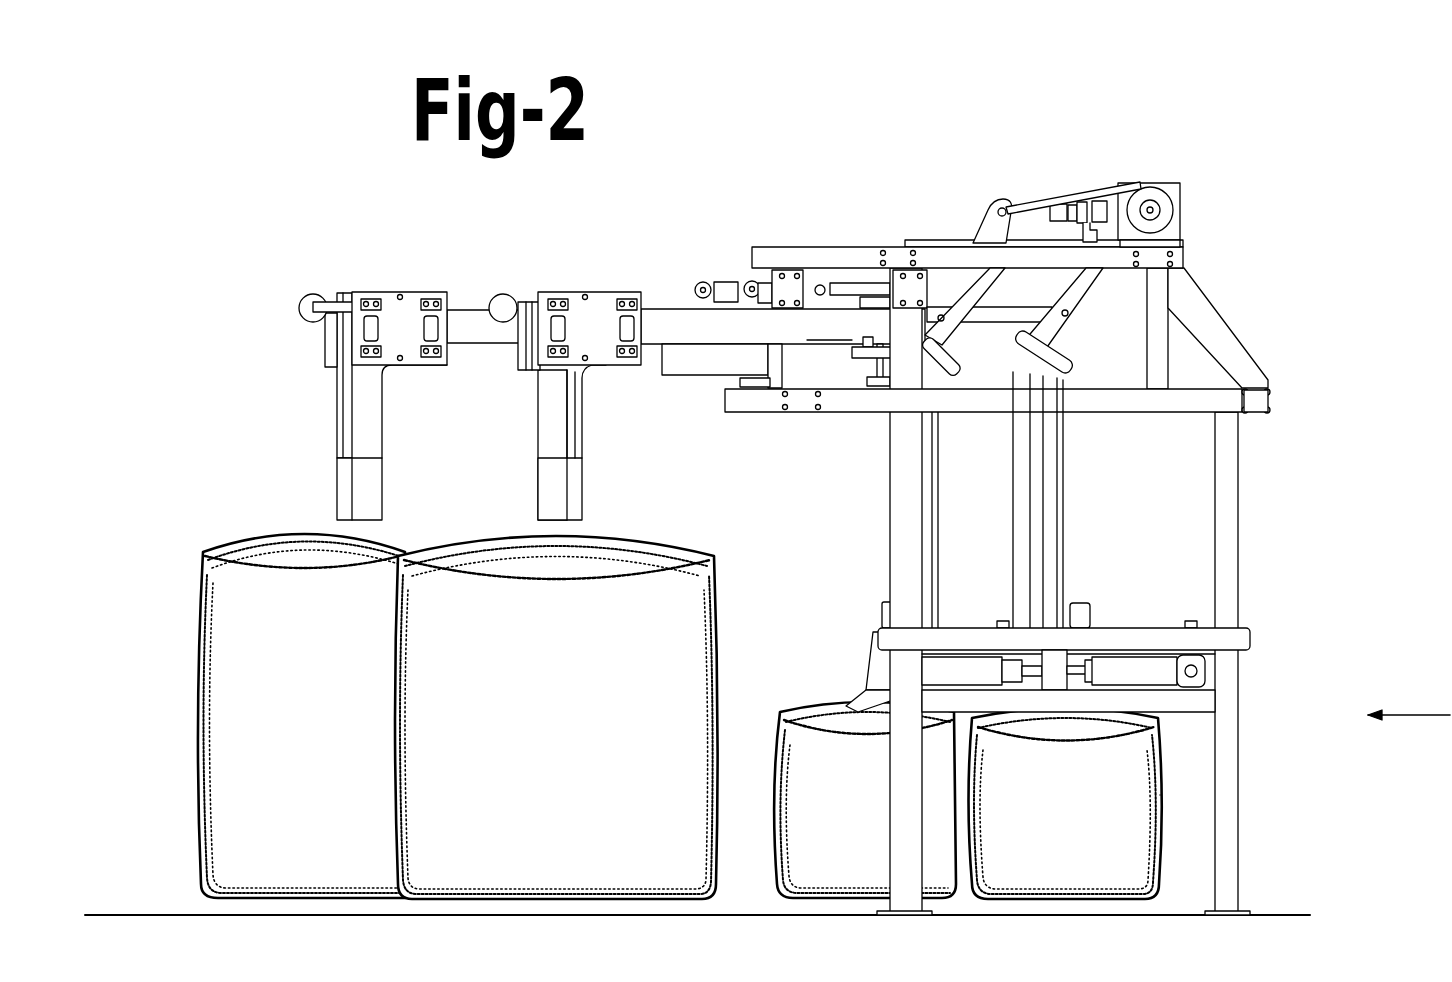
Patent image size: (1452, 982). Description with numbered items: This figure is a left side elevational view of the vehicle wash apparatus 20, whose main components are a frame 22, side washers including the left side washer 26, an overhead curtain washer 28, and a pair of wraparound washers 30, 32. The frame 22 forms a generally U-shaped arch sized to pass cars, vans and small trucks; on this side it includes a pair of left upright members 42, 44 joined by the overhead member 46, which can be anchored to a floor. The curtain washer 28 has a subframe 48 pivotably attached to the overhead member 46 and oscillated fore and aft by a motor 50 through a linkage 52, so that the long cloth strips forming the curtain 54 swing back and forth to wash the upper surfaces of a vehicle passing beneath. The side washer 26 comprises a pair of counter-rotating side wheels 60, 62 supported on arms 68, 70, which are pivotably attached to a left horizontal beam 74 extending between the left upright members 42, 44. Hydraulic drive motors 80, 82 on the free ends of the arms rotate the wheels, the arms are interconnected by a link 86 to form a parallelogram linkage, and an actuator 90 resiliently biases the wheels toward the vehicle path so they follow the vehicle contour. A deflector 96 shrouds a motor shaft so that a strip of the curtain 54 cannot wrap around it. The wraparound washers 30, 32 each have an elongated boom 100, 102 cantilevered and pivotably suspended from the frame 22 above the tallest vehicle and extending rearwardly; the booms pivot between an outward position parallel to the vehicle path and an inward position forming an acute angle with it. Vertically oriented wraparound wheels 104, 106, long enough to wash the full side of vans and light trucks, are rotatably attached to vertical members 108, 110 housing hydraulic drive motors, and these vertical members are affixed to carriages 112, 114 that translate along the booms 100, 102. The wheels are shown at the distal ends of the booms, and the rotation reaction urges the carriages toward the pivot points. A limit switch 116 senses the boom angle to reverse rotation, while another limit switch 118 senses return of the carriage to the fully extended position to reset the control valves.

The vehicle wash apparatus 20 is at (1065, 521).
The frame 22 is at (1065, 591).
The side washer 26 is at (1160, 795).
The overhead curtain washer 28 is at (1072, 522).
The wraparound washer 30 is at (347, 406).
The wraparound washer 32 is at (617, 442).
The left upright member 42 is at (1240, 548).
The left upright member 44 is at (900, 512).
The overhead member 46 is at (862, 247).
The subframe 48 is at (976, 222).
The motor 50 is at (1148, 185).
The linkage 52 is at (1055, 200).
The curtain 54 is at (1010, 462).
The side wheel 60 is at (1205, 840).
The side wheel 62 is at (783, 778).
The arm 68 is at (1215, 684).
The arm 70 is at (816, 662).
The left horizontal beam 74 is at (1117, 591).
The hydraulic drive motor 80 is at (1083, 605).
The hydraulic drive motor 82 is at (883, 605).
The link 86 is at (1098, 668).
The actuator 90 is at (1043, 655).
The deflector 96 is at (857, 700).
The boom 100 is at (468, 310).
The boom 102 is at (662, 310).
The wraparound wheel 104 is at (232, 545).
The wraparound wheel 106 is at (682, 548).
The vertical member 108 is at (385, 482).
The vertical member 110 is at (585, 483).
The carriage 112 is at (397, 292).
The carriage 114 is at (585, 296).
The limit switch 116 is at (857, 345).
The limit switch 118 is at (522, 362).